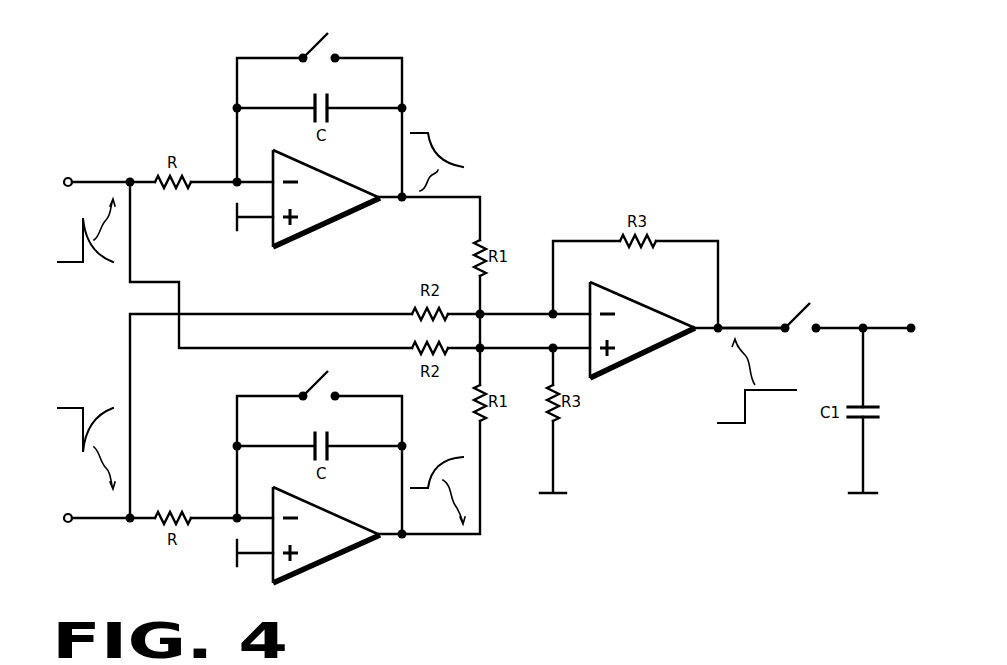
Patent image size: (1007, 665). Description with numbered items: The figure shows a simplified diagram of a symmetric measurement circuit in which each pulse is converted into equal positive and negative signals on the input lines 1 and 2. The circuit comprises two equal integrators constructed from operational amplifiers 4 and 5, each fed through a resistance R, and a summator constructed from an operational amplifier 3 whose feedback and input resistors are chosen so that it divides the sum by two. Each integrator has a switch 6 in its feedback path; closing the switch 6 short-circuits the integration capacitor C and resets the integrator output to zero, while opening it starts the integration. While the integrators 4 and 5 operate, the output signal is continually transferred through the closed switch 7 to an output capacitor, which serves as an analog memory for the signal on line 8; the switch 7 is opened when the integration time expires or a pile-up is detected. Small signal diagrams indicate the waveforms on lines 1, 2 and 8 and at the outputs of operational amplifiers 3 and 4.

The input line 1 is at (97, 181).
The input line 2 is at (113, 522).
The operational amplifier 3 is at (659, 339).
The operational amplifier 4 is at (340, 207).
The operational amplifier 5 is at (340, 544).
The switch 6 is at (319, 210).
The switch 7 is at (801, 311).
The line 8 is at (740, 330).